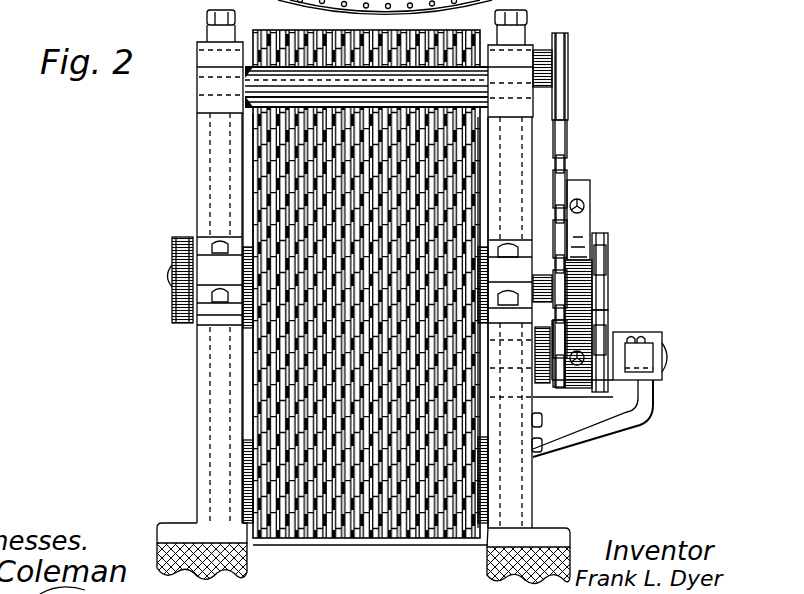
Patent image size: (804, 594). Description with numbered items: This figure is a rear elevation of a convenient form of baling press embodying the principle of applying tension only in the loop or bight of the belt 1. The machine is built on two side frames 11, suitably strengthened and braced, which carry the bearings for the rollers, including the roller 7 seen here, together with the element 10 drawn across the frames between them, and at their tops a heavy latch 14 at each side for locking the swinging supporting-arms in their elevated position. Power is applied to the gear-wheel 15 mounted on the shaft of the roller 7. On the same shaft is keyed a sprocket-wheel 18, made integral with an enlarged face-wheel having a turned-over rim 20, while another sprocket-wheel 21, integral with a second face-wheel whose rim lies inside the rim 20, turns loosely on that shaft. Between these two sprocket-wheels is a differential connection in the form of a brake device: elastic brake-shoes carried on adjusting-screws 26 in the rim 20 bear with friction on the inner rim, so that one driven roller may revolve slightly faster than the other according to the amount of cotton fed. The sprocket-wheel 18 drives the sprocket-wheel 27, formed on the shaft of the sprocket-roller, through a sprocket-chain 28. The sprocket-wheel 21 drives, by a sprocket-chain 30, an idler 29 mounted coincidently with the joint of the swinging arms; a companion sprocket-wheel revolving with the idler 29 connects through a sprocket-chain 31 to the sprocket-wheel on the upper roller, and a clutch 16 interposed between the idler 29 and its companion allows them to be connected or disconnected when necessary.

The belt 1 is at (288, 26).
The roller 7 is at (493, 240).
The roller 10 is at (366, 87).
The side frames 11 is at (207, 404).
The latch 14 is at (198, 14).
The gear-wheel 15 is at (174, 313).
The clutch 16 is at (538, 380).
The sprocket-wheel 18 is at (607, 297).
The turned-over rim 20 is at (590, 182).
The sprocket-wheel 21 is at (608, 265).
The adjusting-screws 26 is at (585, 205).
The sprocket-wheel 27 is at (568, 67).
The sprocket-chain 28 is at (565, 143).
The idler 29 is at (612, 328).
The sprocket-chain 30 is at (608, 316).
The sprocket-chain 31 is at (563, 385).